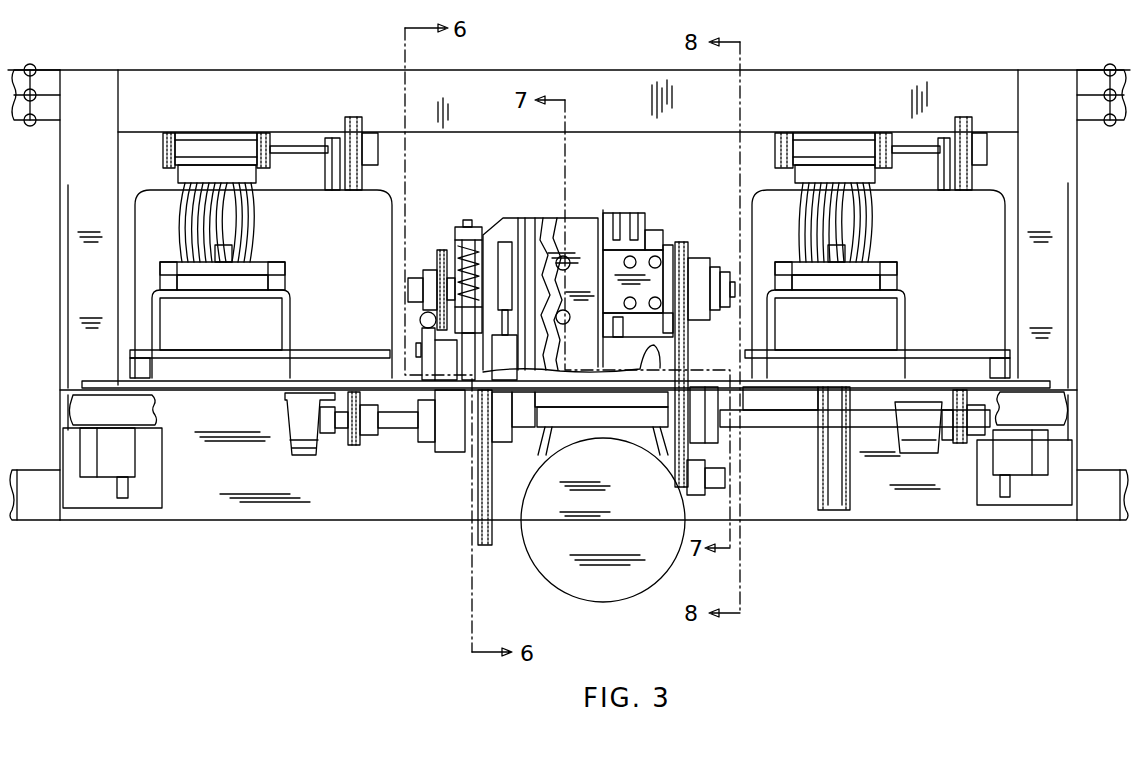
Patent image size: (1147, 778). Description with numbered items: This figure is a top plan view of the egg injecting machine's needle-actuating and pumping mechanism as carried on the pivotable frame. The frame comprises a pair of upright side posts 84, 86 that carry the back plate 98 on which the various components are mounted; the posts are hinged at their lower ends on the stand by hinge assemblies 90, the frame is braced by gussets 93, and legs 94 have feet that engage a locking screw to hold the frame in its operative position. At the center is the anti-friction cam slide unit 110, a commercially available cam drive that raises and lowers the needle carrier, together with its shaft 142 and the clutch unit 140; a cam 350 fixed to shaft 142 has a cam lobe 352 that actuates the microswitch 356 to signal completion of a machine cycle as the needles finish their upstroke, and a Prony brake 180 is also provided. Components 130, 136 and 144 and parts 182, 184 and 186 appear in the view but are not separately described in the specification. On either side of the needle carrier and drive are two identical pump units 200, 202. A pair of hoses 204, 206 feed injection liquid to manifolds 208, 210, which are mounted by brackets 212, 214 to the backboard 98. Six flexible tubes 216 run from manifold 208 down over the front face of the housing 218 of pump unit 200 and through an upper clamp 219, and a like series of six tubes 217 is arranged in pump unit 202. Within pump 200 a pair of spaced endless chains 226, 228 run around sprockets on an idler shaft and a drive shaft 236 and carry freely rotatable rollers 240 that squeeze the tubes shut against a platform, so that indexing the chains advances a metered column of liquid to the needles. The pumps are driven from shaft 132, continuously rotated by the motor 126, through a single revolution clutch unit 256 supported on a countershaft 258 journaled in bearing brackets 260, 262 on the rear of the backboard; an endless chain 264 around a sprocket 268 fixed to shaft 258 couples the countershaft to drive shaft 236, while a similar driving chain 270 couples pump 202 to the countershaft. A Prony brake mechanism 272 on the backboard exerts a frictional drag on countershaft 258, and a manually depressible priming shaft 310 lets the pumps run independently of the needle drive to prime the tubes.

The upright side post 84 is at (62, 408).
The upright side post 86 is at (1078, 412).
The hinge assembly 90 is at (1022, 480).
The gusset 93 is at (62, 337).
The leg 94 is at (62, 166).
The back plate 98 is at (216, 390).
The anti-friction cam slide unit 110 is at (577, 218).
The motor 126 is at (612, 594).
The stub shaft 130 is at (725, 479).
The shaft 132 is at (478, 480).
The gear 136 is at (690, 355).
The clutch unit 140 is at (665, 245).
The shaft 142 is at (430, 284).
The lower bracket 144 is at (618, 336).
The Prony brake 180 is at (472, 260).
The spring sleeve 182 is at (458, 255).
The spring 184 is at (481, 228).
The cap 186 is at (458, 226).
The pump unit 200 is at (224, 111).
The pump unit 202 is at (837, 132).
The hose 204 is at (235, 240).
The hose 206 is at (838, 230).
The manifold 208 is at (288, 268).
The manifold 210 is at (900, 270).
The bracket 212 is at (292, 330).
The bracket 214 is at (907, 322).
The flexible tubes 216 is at (200, 196).
The tubes 217 is at (860, 246).
The housing 218 is at (138, 258).
The upper clamp 219 is at (174, 183).
The endless chain 226 is at (172, 132).
The endless chain 228 is at (263, 132).
The drive shaft 236 is at (300, 143).
The rollers 240 is at (192, 152).
The single revolution clutch unit 256 is at (435, 449).
The countershaft 258 is at (757, 430).
The bearing bracket 260 is at (297, 455).
The bearing bracket 262 is at (920, 455).
The endless chain 264 is at (358, 116).
The sprocket 268 is at (372, 436).
The driving chain 270 is at (966, 115).
The Prony brake mechanism 272 is at (821, 512).
The shaft 310 is at (426, 326).
The cam 350 is at (504, 240).
The cam lobe 352 is at (505, 292).
The microswitch 356 is at (510, 352).